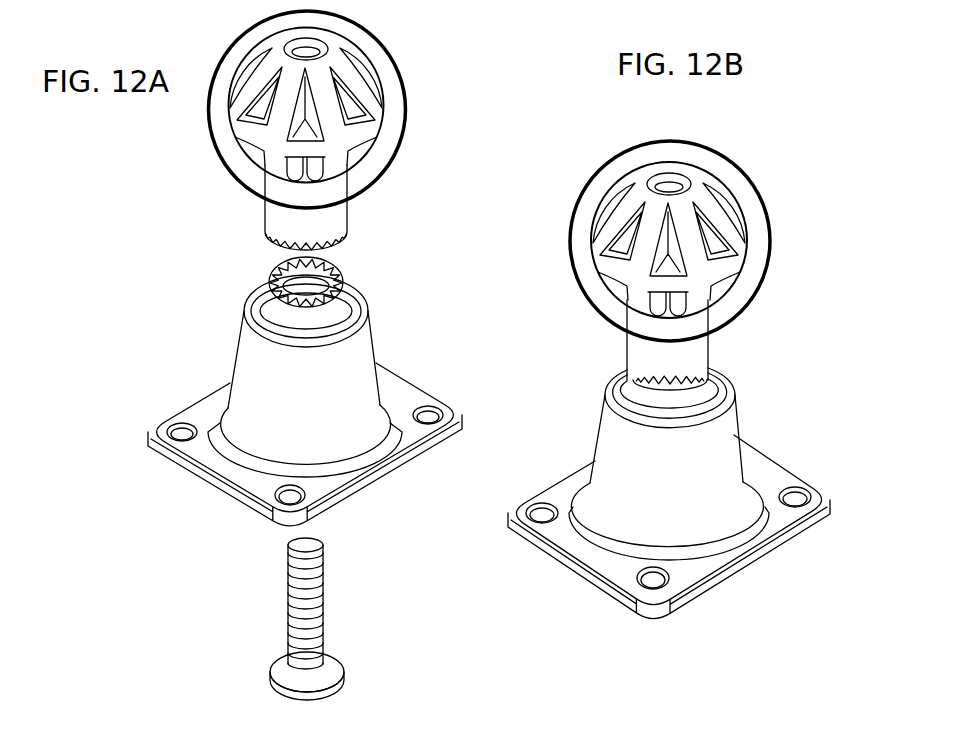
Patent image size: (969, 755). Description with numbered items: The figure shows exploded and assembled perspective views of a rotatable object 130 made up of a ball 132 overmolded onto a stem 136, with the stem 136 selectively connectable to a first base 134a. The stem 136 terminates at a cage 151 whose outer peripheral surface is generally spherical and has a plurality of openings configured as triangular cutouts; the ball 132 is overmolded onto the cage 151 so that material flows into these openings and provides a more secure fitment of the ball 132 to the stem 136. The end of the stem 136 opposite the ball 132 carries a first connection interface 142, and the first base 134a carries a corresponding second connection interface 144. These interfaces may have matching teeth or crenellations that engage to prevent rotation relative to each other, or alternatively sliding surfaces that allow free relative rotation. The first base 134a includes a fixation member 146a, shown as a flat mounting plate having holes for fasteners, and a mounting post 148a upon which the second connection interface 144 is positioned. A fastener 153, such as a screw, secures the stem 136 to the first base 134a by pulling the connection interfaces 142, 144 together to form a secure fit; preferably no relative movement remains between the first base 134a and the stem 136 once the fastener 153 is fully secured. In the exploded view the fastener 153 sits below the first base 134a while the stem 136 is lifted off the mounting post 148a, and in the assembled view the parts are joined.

In FIG. 12A, the rotatable object 130 is at (445, 76).
In FIG. 12B, the rotatable object 130 is at (815, 121).
In FIG. 12A, the ball 132 is at (393, 123).
In FIG. 12B, the ball 132 is at (760, 239).
In FIG. 12A, the stem 136 is at (333, 215).
In FIG. 12B, the stem 136 is at (700, 348).
In FIG. 12A, the first connection interface 142 is at (332, 242).
In FIG. 12A, the second connection interface 144 is at (280, 262).
In FIG. 12A, the mounting post 148a is at (258, 358).
In FIG. 12B, the mounting post 148a is at (613, 440).
In FIG. 12A, the cage 151 is at (232, 137).
In FIG. 12B, the cage 151 is at (607, 280).
In FIG. 12A, the fixation member 146a is at (224, 503).
In FIG. 12B, the fixation member 146a is at (565, 567).
In FIG. 12A, the first base 134a is at (355, 490).
In FIG. 12B, the first base 134a is at (773, 558).
In FIG. 12A, the fastener 153 is at (325, 628).